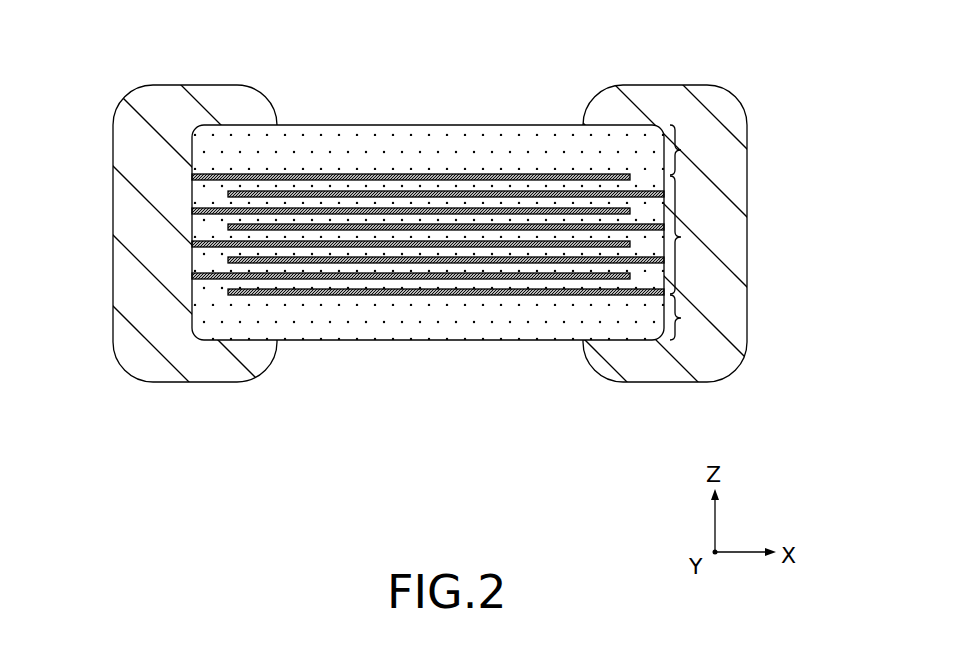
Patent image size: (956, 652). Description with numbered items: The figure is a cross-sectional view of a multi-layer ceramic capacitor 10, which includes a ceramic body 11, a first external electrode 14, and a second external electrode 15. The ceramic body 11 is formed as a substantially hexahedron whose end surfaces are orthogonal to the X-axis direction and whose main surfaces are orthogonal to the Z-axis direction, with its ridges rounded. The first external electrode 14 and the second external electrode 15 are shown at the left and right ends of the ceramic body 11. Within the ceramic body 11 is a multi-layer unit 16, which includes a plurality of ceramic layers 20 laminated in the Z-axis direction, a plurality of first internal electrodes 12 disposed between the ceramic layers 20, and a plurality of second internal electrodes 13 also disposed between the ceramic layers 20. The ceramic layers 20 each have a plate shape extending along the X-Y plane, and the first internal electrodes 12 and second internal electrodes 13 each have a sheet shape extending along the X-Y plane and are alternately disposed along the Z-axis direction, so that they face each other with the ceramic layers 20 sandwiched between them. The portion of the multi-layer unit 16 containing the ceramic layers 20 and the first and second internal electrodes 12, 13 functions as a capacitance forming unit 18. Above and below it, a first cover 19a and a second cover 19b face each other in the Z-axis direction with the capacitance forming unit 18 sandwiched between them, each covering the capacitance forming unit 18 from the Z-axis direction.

The multi-layer ceramic capacitor 10 is at (136, 53).
The ceramic body 11 is at (424, 92).
The multi-layer unit 16 is at (463, 230).
The first internal electrode 12 is at (305, 273).
The second internal electrode 13 is at (499, 289).
The first external electrode 14 is at (128, 234).
The second external electrode 15 is at (738, 236).
The capacitance forming unit 18 is at (695, 235).
The first cover 19a is at (701, 150).
The second cover 19b is at (702, 317).
The ceramic layer 20 is at (456, 216).